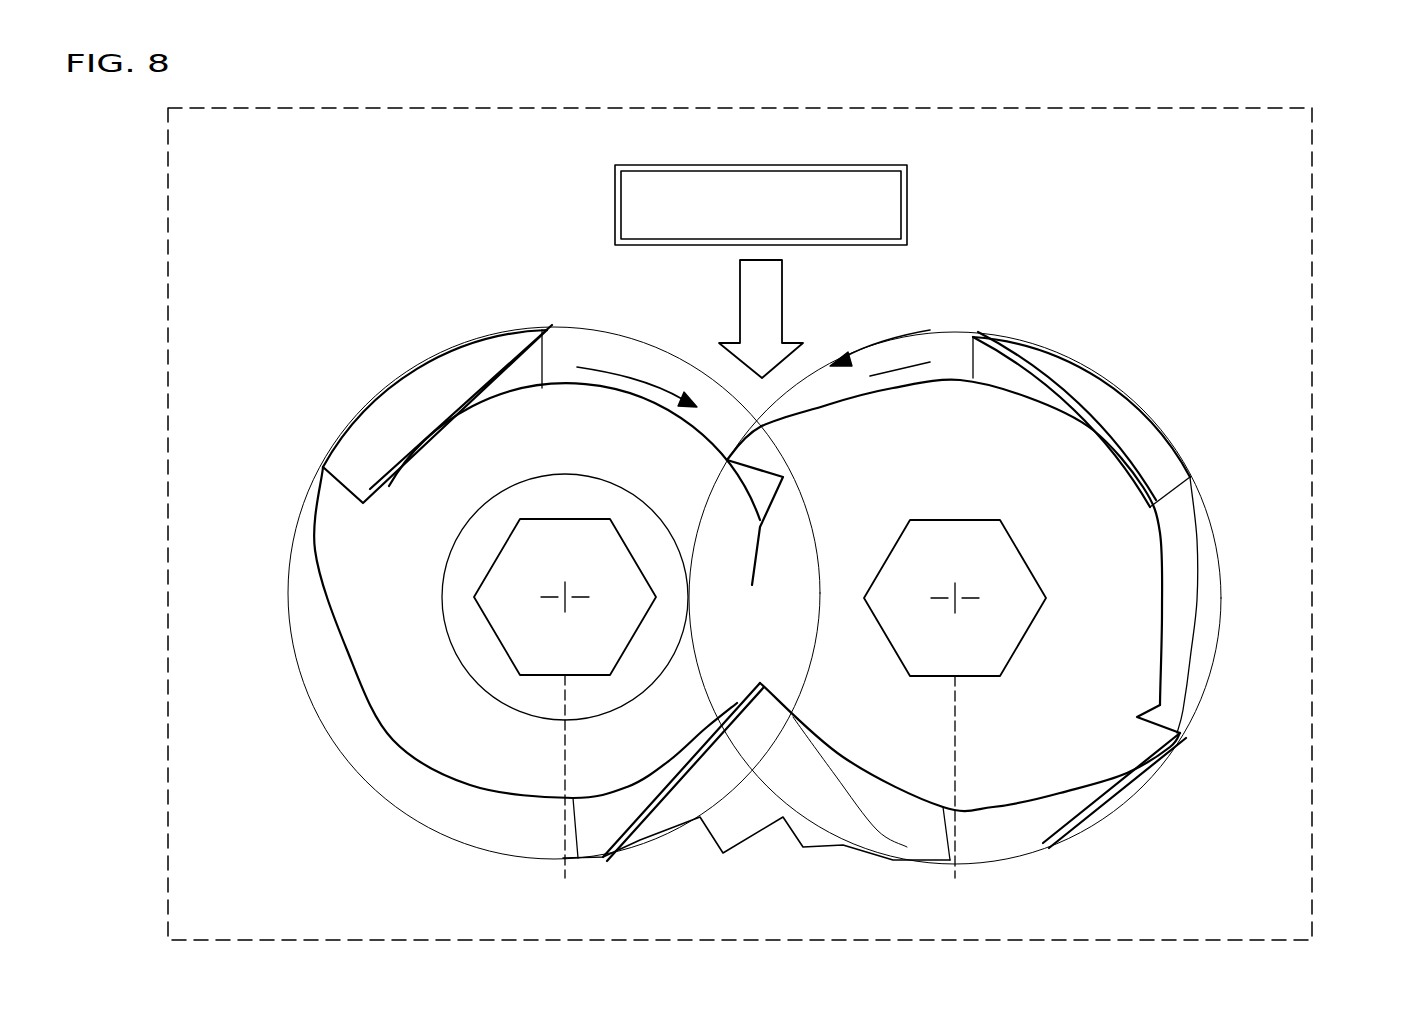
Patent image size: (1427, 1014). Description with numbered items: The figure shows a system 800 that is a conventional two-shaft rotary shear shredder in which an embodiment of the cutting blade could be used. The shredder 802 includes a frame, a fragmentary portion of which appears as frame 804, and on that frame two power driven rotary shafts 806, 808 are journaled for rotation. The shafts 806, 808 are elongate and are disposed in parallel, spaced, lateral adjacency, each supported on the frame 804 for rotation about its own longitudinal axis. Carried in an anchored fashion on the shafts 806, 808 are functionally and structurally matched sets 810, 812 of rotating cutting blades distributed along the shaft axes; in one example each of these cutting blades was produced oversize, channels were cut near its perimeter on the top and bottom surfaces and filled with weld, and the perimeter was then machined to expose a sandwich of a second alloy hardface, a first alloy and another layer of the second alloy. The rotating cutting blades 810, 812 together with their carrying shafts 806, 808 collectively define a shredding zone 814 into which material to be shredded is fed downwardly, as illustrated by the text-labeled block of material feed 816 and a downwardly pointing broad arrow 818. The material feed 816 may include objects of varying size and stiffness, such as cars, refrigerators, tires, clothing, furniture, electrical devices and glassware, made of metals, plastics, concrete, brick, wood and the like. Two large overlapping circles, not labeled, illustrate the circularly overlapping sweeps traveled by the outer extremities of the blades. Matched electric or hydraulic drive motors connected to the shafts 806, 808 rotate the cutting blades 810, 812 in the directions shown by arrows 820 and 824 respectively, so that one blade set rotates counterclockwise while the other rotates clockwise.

The system 800 is at (1328, 52).
The shredder 802 is at (1296, 107).
The frame 804 is at (712, 752).
The rotary shaft 806 is at (527, 607).
The rotary shaft 808 is at (917, 612).
The set of rotating cutting blades 810 is at (362, 461).
The set of rotating cutting blades 812 is at (1150, 465).
The shredding zone 814 is at (838, 352).
The material feed 816 is at (846, 165).
The broad arrow 818 is at (761, 319).
The arrow 820 is at (645, 385).
The arrow 824 is at (905, 366).